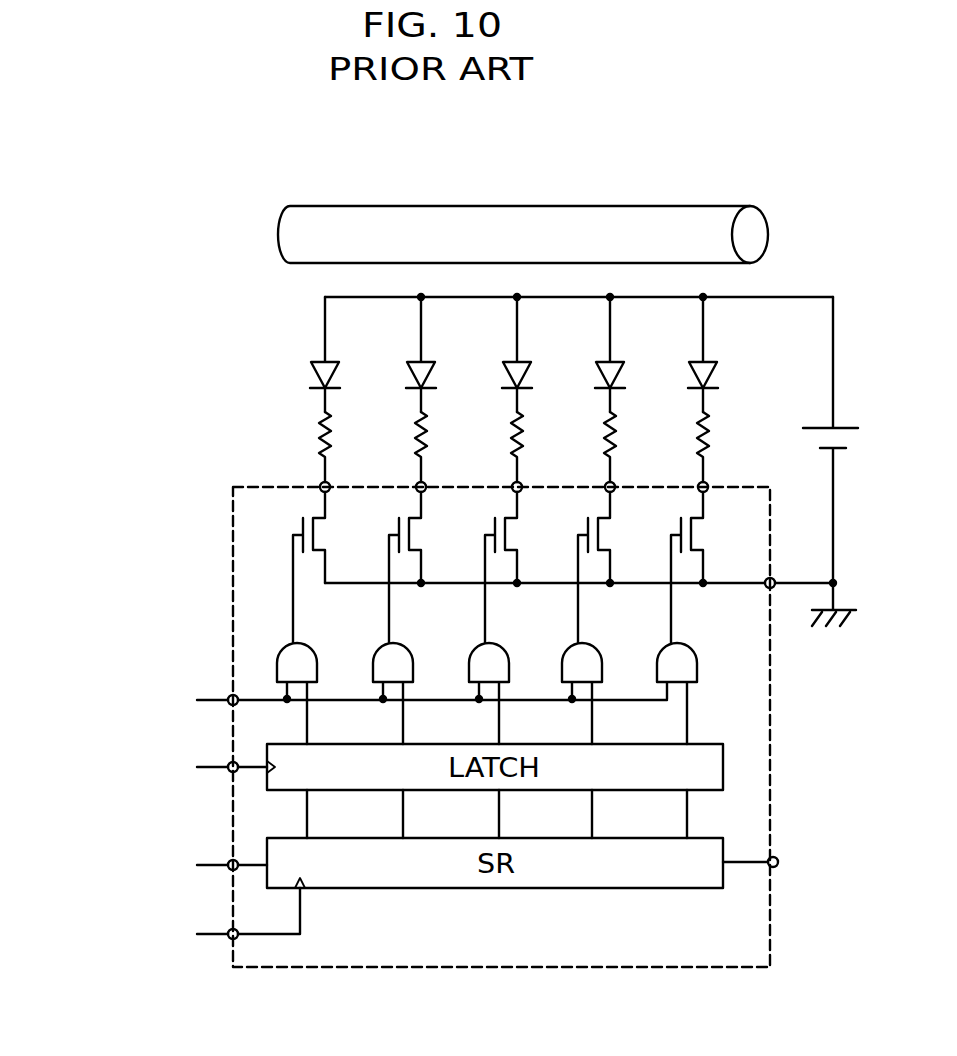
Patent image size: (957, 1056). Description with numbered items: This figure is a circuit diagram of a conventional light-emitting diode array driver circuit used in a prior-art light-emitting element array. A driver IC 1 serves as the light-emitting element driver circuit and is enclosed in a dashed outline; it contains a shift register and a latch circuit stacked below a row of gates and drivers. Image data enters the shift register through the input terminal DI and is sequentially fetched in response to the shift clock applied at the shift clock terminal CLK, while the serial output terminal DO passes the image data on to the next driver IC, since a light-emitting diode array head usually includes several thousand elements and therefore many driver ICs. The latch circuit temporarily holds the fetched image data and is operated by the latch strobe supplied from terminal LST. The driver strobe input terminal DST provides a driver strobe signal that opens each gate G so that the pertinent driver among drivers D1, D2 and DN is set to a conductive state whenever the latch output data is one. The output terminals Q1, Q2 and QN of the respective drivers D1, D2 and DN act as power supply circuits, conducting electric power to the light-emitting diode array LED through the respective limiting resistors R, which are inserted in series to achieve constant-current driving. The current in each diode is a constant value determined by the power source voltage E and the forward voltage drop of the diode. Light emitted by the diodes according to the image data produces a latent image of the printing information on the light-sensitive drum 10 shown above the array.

The light-sensitive drum 10 is at (712, 206).
The driver IC 1 is at (645, 967).
The light-emitting diode array LED is at (312, 376).
The limiting resistor R is at (318, 432).
The power source voltage E is at (805, 436).
The gate G is at (284, 648).
The output terminal Q1 is at (320, 485).
The output terminal Q2 is at (416, 485).
The output terminal QN is at (698, 485).
The driver D1 is at (329, 540).
The driver D2 is at (425, 540).
The driver DN is at (706, 538).
The driver strobe input terminal DST is at (229, 696).
The latch strobe terminal LST is at (229, 771).
The input terminal DI is at (229, 869).
The shift clock terminal CLK is at (230, 939).
The serial output terminal DO is at (777, 858).